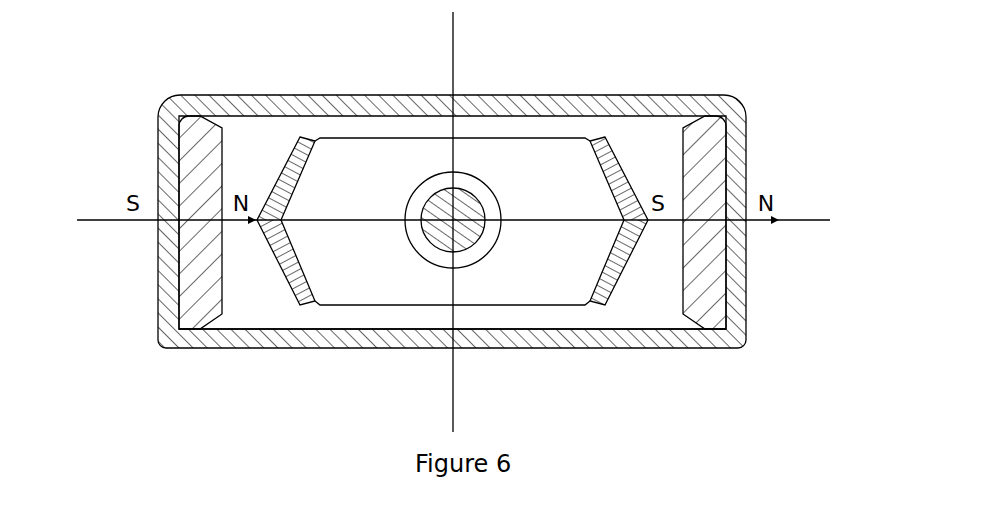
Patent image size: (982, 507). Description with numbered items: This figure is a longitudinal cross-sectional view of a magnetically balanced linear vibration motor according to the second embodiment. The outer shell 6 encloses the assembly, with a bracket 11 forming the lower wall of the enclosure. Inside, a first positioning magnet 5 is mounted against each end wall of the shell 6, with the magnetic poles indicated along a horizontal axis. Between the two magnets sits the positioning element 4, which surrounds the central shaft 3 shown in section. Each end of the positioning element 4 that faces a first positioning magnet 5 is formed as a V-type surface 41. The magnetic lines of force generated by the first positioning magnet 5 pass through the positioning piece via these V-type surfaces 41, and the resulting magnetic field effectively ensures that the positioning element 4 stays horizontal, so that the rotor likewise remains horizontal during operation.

The shaft 3 is at (443, 193).
The positioning element 4 is at (357, 302).
The V-type surface 41 is at (300, 288).
The first positioning magnet 5 is at (190, 145).
The shell 6 is at (600, 108).
The bracket 11 is at (537, 340).